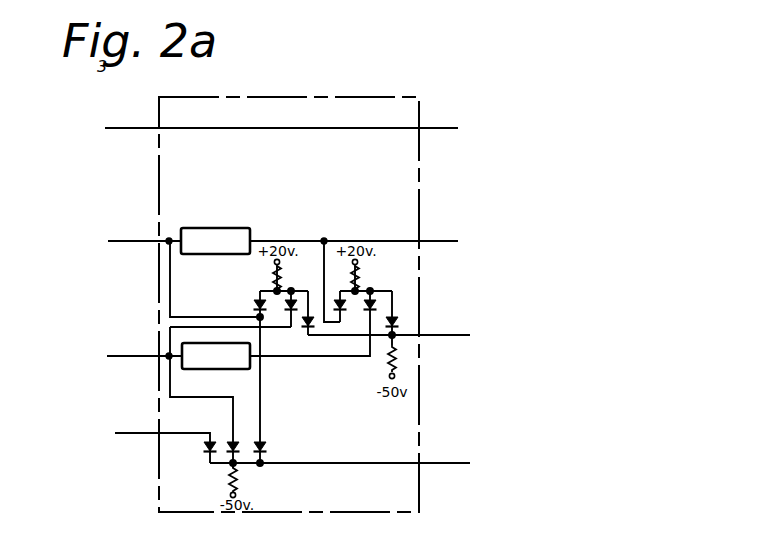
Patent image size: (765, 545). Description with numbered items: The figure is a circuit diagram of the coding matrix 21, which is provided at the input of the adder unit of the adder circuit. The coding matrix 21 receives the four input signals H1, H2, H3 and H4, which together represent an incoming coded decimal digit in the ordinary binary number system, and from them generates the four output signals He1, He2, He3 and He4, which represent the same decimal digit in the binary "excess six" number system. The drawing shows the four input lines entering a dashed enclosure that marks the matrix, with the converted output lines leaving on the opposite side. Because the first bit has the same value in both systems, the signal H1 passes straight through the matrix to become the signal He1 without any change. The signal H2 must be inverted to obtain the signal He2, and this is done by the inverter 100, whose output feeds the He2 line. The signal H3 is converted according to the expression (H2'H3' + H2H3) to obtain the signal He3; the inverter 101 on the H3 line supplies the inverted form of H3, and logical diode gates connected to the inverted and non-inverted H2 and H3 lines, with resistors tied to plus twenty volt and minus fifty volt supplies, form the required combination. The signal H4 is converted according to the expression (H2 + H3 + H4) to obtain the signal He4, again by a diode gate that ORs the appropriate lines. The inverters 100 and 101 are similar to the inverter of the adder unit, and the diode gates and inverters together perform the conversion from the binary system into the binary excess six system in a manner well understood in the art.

The coding matrix 21 is at (421, 494).
The signal H1 is at (131, 128).
The signal H2 is at (131, 241).
The signal H3 is at (133, 356).
The signal H4 is at (143, 433).
The signal He1 is at (446, 128).
The signal He2 is at (446, 241).
The signal He3 is at (450, 335).
The signal He4 is at (452, 463).
The inverter 100 is at (206, 227).
The inverter 101 is at (209, 369).